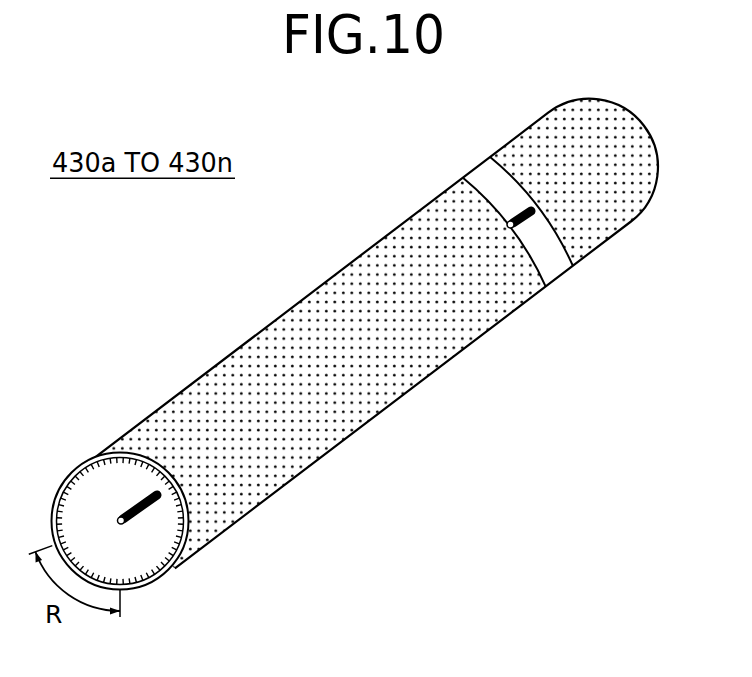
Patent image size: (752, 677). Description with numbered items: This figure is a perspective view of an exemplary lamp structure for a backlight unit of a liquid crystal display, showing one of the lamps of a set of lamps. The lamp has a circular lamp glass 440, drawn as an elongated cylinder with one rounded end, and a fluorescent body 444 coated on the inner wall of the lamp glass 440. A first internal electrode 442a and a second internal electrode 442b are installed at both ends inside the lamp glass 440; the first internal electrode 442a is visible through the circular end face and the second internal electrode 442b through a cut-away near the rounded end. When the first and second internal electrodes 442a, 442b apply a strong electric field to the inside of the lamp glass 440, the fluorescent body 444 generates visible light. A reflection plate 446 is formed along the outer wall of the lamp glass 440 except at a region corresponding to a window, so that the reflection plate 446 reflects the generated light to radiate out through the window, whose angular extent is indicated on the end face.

The lamp glass 440 is at (548, 268).
The first internal electrode 442a is at (138, 503).
The second internal electrode 442b is at (518, 212).
The fluorescent body 444 is at (68, 478).
The reflection plate 446 is at (158, 583).